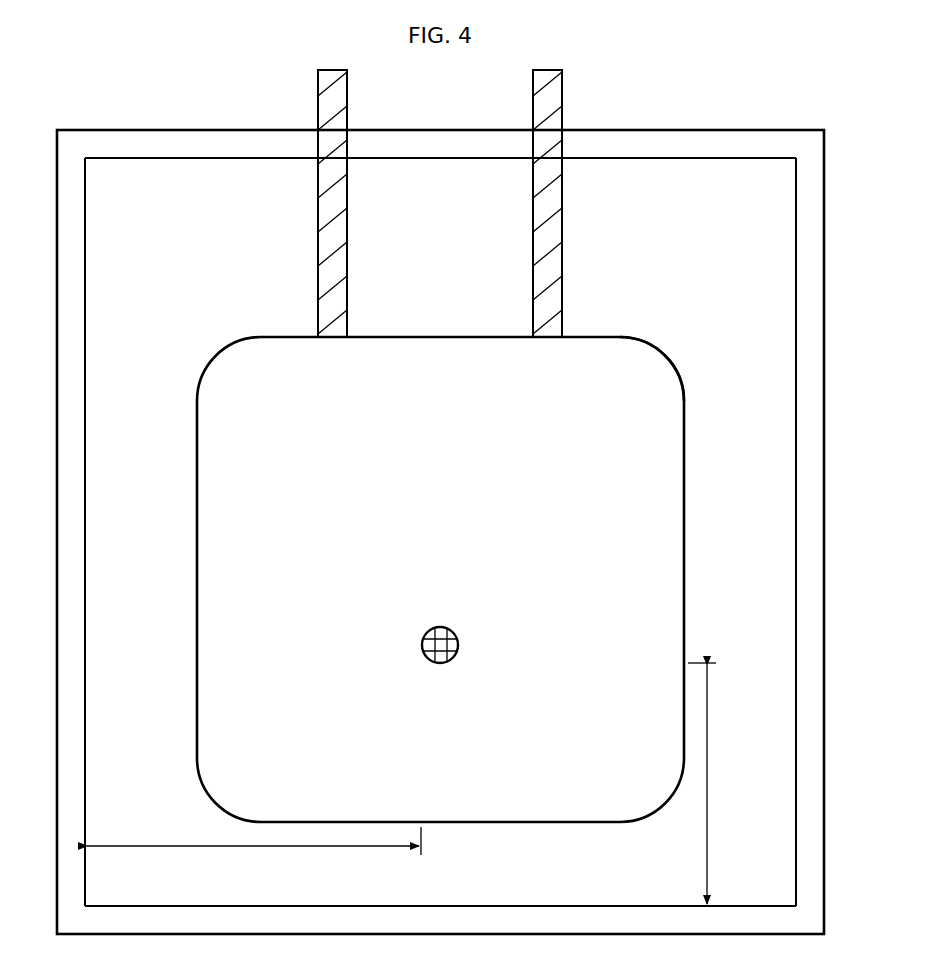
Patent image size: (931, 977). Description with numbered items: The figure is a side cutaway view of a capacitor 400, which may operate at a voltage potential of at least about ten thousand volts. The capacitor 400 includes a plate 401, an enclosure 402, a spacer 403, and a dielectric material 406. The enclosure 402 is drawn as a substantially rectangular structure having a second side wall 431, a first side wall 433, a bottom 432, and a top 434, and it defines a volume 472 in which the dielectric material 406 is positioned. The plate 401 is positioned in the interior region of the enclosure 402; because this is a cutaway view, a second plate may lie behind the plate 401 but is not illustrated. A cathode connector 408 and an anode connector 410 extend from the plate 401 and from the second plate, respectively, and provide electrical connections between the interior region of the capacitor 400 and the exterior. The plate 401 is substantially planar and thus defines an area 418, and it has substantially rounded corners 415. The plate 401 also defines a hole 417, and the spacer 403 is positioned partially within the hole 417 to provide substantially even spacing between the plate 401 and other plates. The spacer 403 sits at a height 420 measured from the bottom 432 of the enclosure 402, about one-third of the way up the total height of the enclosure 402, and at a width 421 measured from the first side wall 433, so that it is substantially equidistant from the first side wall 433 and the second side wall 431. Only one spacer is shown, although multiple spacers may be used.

The capacitor 400 is at (222, 82).
The plate 401 is at (437, 337).
The enclosure 402 is at (707, 129).
The spacer 403 is at (448, 634).
The dielectric material 406 is at (722, 518).
The cathode connector 408 is at (318, 108).
The anode connector 410 is at (562, 108).
The rounded corners 415 is at (663, 359).
The hole 417 is at (432, 660).
The area 418 is at (422, 518).
The height 420 is at (707, 790).
The width 421 is at (252, 846).
The second side wall 431 is at (85, 218).
The bottom 432 is at (494, 906).
The first side wall 433 is at (796, 220).
The top 434 is at (270, 158).
The volume 472 is at (122, 518).